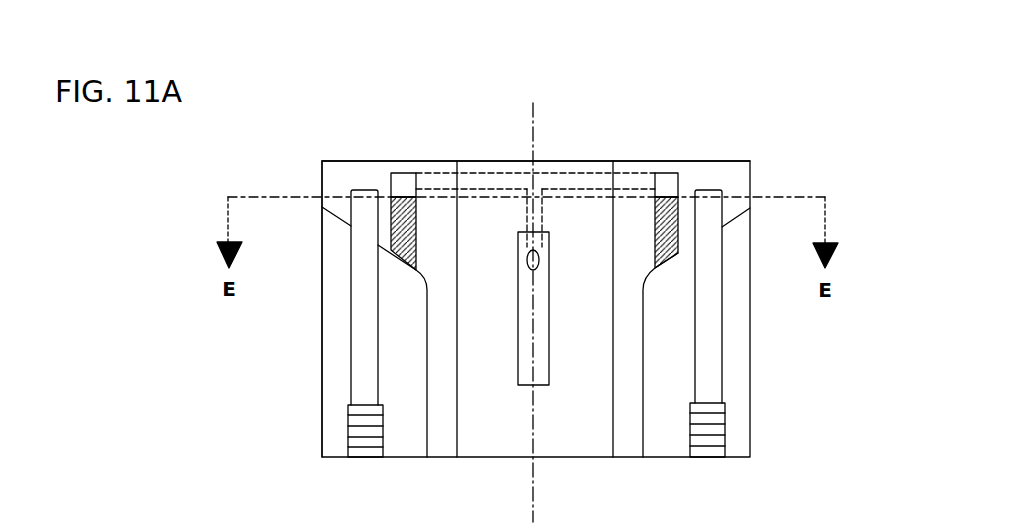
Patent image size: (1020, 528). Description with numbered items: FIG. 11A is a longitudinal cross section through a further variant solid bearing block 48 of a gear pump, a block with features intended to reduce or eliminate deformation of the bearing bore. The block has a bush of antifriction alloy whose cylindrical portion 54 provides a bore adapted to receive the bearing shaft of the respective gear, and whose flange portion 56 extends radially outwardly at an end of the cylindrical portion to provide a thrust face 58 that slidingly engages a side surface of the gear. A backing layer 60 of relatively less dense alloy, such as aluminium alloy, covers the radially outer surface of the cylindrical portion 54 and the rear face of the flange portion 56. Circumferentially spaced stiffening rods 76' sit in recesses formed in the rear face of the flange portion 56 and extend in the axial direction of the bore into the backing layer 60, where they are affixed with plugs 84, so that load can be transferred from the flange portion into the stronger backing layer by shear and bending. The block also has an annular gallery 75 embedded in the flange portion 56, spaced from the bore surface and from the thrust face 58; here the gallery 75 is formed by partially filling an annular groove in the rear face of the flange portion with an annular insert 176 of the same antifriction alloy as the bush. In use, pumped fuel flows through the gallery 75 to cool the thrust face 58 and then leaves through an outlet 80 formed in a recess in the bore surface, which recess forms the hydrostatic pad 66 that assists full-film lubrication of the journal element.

The solid bearing block 48 is at (762, 162).
The flange portion 56 is at (322, 176).
The thrust face 58 is at (657, 160).
The stiffening rods 76' is at (342, 230).
The annular gallery 75 is at (406, 186).
The annular insert 176 is at (670, 212).
The cylindrical portion 54 is at (443, 365).
The backing layer 60 is at (737, 432).
The plugs 84 is at (363, 458).
The hydrostatic pad 66 is at (549, 352).
The outlet 80 is at (538, 263).